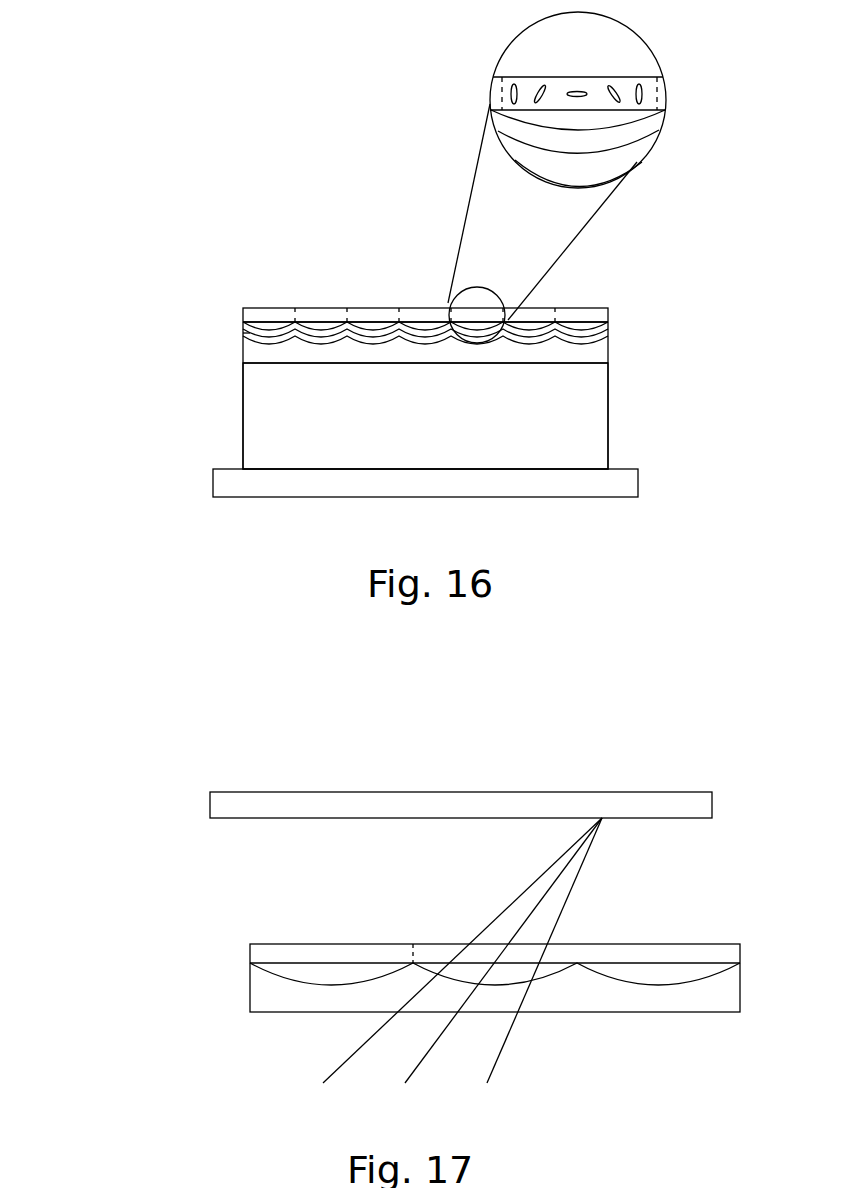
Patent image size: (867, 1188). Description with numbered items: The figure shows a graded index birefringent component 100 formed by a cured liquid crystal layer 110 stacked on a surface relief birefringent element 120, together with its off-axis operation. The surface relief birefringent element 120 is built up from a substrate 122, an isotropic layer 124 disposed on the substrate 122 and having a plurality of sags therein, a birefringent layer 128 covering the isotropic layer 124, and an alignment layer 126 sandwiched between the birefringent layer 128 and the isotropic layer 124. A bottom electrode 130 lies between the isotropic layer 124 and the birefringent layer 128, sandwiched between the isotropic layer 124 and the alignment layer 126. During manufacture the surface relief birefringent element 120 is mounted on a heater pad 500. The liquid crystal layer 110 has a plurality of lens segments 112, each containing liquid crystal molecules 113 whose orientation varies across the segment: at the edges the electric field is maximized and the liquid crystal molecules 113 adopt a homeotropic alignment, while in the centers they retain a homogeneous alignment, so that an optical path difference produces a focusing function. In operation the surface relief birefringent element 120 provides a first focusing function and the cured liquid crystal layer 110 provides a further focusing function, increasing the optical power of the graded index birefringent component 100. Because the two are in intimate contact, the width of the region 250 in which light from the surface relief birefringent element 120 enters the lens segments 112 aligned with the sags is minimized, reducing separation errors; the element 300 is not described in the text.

In FIG. 16, the graded index birefringent component 100 is at (157, 273).
In FIG. 17, the graded index birefringent component 100 is at (381, 938).
In FIG. 16, the liquid crystal layer 110 is at (482, 290).
In FIG. 17, the liquid crystal layer 110 is at (431, 914).
In FIG. 16, the lens segments 112 is at (355, 308).
In FIG. 17, the lens segments 112 is at (423, 948).
In FIG. 16, the liquid crystal molecules 113 is at (617, 92).
In FIG. 16, the surface relief birefringent element 120 is at (327, 395).
In FIG. 17, the surface relief birefringent element 120 is at (250, 987).
In FIG. 16, the substrate 122 is at (376, 416).
In FIG. 16, the isotropic layer 124 is at (250, 358).
In FIG. 16, the alignment layer 126 is at (244, 333).
In FIG. 16, the birefringent layer 128 is at (245, 323).
In FIG. 16, the bottom electrode 130 is at (608, 340).
In FIG. 16, the heater pad 500 is at (638, 477).
In FIG. 17, the light source 300 is at (210, 803).
In FIG. 17, the region 250 is at (585, 945).